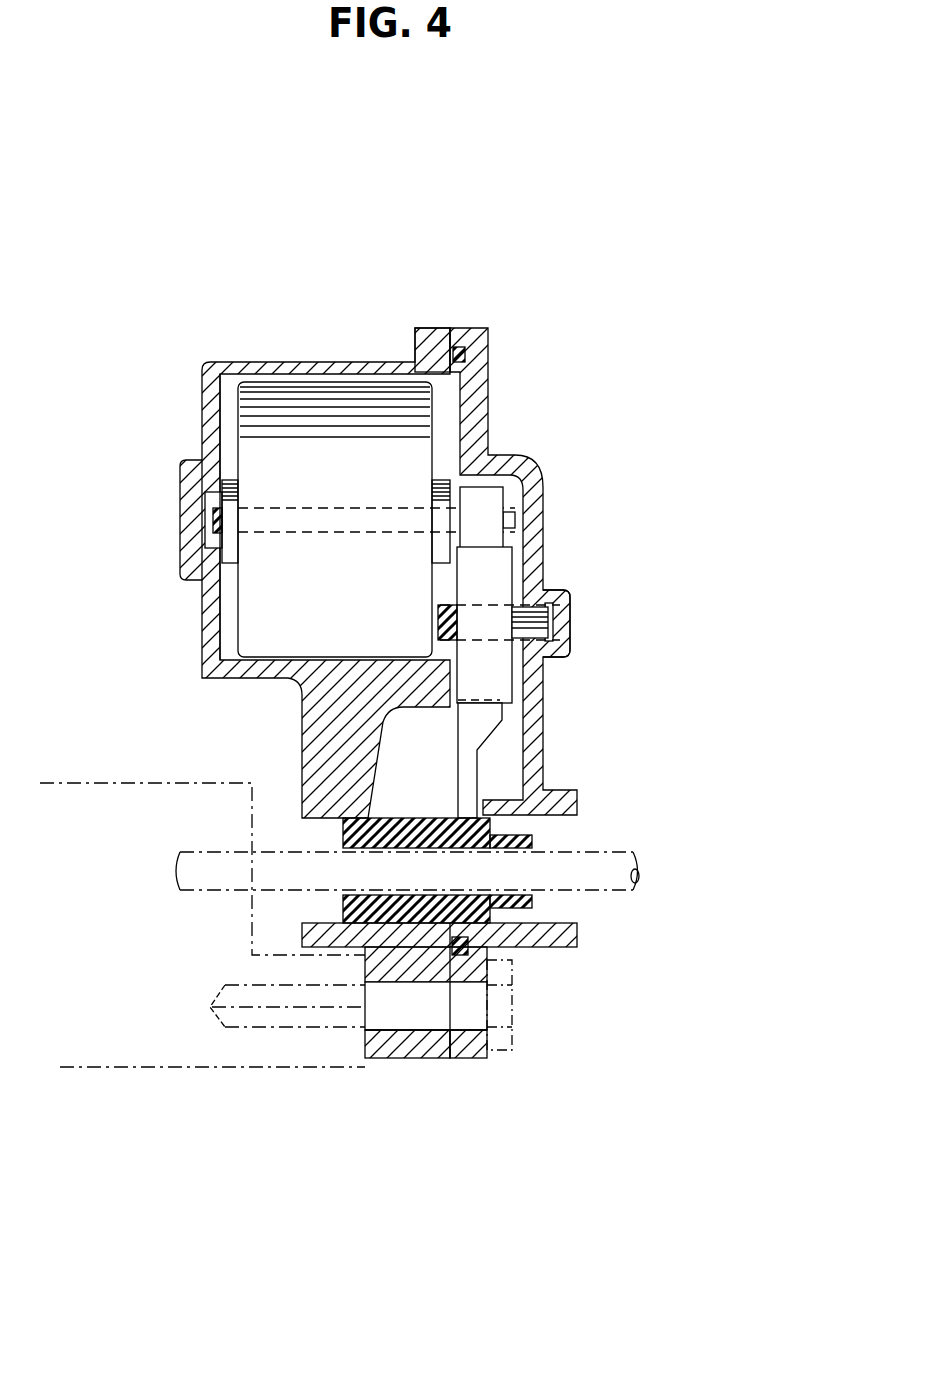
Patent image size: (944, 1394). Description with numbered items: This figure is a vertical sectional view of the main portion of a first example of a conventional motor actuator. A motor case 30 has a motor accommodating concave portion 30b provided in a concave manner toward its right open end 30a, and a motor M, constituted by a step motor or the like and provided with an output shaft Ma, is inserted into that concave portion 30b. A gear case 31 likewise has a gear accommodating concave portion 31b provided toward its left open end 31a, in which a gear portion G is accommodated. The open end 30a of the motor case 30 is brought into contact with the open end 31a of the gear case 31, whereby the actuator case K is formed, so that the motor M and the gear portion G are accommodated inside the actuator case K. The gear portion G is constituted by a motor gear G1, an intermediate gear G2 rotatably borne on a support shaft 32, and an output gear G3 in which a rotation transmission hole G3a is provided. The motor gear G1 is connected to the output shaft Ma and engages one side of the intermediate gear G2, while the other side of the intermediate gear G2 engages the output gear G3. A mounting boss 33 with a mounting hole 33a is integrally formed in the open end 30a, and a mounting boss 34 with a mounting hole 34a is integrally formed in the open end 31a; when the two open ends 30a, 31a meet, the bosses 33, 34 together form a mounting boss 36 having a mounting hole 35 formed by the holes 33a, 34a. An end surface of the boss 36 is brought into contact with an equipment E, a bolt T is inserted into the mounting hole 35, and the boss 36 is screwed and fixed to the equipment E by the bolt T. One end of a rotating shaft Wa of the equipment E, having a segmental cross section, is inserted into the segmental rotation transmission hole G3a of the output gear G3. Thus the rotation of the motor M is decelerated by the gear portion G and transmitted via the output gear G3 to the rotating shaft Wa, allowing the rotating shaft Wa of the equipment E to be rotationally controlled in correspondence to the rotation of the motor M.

The actuator case K is at (429, 470).
The motor case 30 is at (315, 505).
The open end of the motor case 30a is at (429, 334).
The motor accommodating concave portion 30b is at (369, 360).
The gear case 31 is at (564, 502).
The open end of the gear case 31a is at (462, 345).
The gear accommodating concave portion 31b is at (545, 567).
The motor M is at (323, 608).
The output shaft Ma is at (365, 535).
The gear portion G is at (573, 632).
The motor gear G1 is at (543, 486).
The intermediate gear G2 is at (492, 667).
The output gear G3 is at (472, 762).
The rotation transmission hole G3a is at (530, 945).
The support shaft 32 is at (553, 630).
The rotating shaft Wa is at (620, 893).
The bolt T is at (513, 1042).
The equipment E is at (92, 1072).
The mounting boss 33 is at (408, 1058).
The mounting boss 34 is at (465, 1058).
The mounting hole 33a is at (385, 1058).
The mounting hole 34a is at (488, 1058).
The mounting hole 35 is at (440, 1125).
The mounting boss 36 is at (434, 1073).